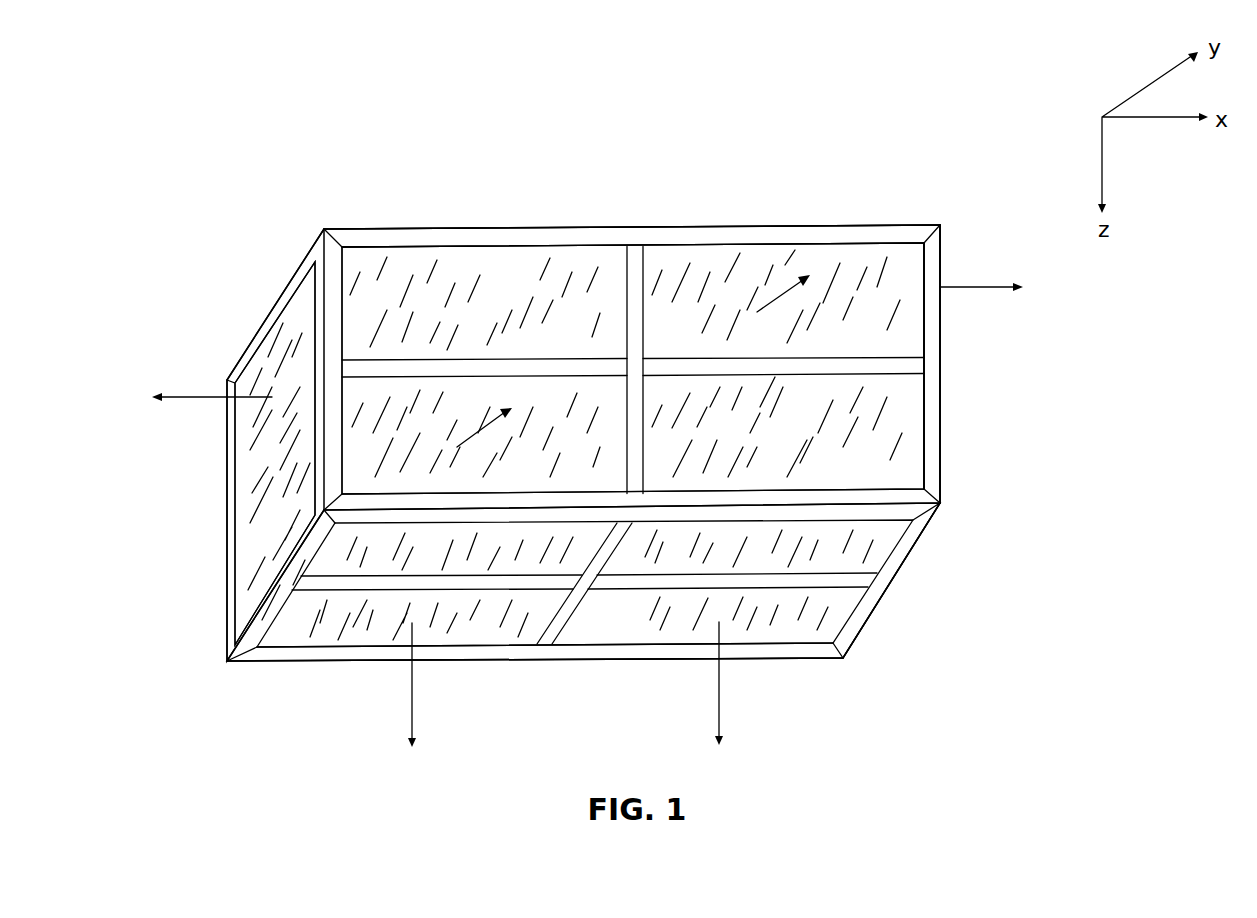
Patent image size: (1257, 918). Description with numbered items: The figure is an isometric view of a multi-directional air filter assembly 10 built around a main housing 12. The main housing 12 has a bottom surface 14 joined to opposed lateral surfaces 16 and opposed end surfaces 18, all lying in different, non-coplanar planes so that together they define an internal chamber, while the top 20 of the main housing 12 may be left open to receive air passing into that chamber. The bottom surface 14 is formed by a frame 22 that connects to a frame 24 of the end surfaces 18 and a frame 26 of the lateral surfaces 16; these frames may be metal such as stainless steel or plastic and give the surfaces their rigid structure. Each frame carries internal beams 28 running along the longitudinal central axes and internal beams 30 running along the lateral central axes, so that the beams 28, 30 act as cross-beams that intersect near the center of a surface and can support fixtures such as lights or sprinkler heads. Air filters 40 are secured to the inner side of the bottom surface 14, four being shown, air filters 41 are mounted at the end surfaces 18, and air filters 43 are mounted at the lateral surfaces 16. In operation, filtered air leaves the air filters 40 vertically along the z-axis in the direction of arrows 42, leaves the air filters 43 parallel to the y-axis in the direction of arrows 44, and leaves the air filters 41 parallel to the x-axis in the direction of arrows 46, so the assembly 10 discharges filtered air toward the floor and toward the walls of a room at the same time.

The multi-directional air filter assembly 10 is at (230, 197).
The main housing 12 is at (942, 226).
The bottom surface 14 is at (773, 633).
The lateral surfaces 16 is at (487, 273).
The end surfaces 18 is at (945, 397).
The top 20 is at (812, 223).
The frame 22 is at (270, 660).
The frame 24 is at (223, 630).
The frame 26 is at (933, 472).
The internal beams 28 is at (910, 365).
The internal beams 30 is at (632, 252).
The air filters 40 is at (880, 543).
The air filters 41 is at (887, 445).
The arrows 42 is at (412, 725).
The air filters 43 is at (400, 298).
The arrows 44 is at (480, 428).
The arrows 46 is at (192, 393).